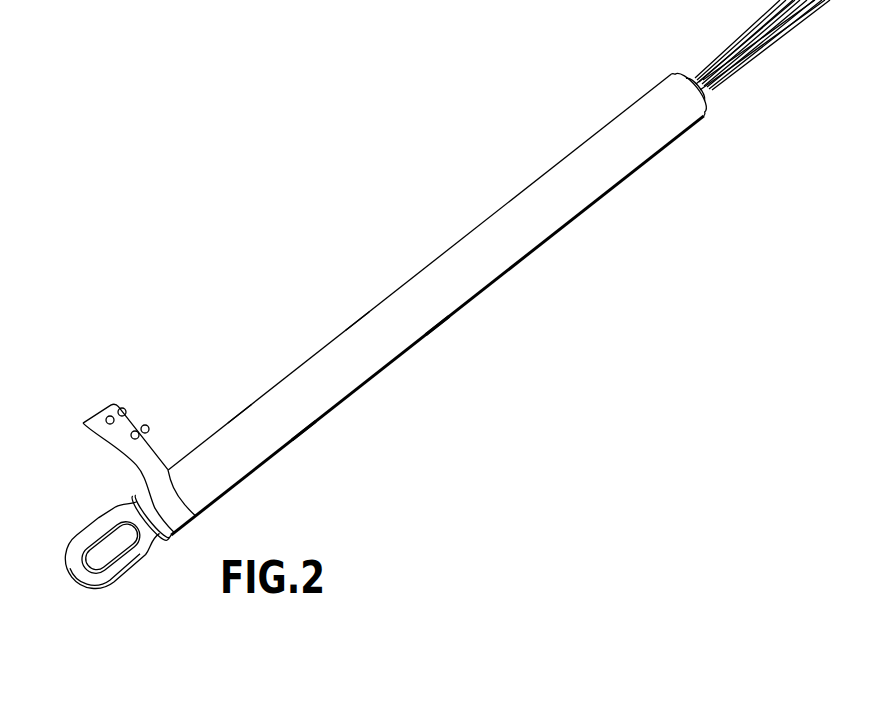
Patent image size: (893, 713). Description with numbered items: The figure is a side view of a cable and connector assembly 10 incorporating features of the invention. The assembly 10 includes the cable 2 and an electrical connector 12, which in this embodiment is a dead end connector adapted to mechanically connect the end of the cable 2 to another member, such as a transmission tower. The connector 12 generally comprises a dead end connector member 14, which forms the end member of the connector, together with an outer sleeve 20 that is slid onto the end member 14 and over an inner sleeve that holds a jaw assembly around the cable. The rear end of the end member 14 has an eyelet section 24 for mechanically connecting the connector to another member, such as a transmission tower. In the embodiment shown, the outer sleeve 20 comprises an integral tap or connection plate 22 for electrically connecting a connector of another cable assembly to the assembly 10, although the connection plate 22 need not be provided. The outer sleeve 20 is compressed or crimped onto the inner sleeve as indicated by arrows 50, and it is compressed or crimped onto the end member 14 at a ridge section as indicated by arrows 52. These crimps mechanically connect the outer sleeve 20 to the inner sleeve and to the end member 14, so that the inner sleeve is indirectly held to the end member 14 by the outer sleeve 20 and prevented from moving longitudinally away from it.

The cable 2 is at (742, 55).
The cable and connector assembly 10 is at (441, 300).
The electrical connector 12 is at (339, 334).
The dead end connector member 14 is at (114, 491).
The outer sleeve 20 is at (499, 281).
The connection plate 22 is at (103, 402).
The eyelet section 24 is at (72, 557).
The arrows 50 is at (366, 297).
The arrows 52 is at (241, 398).